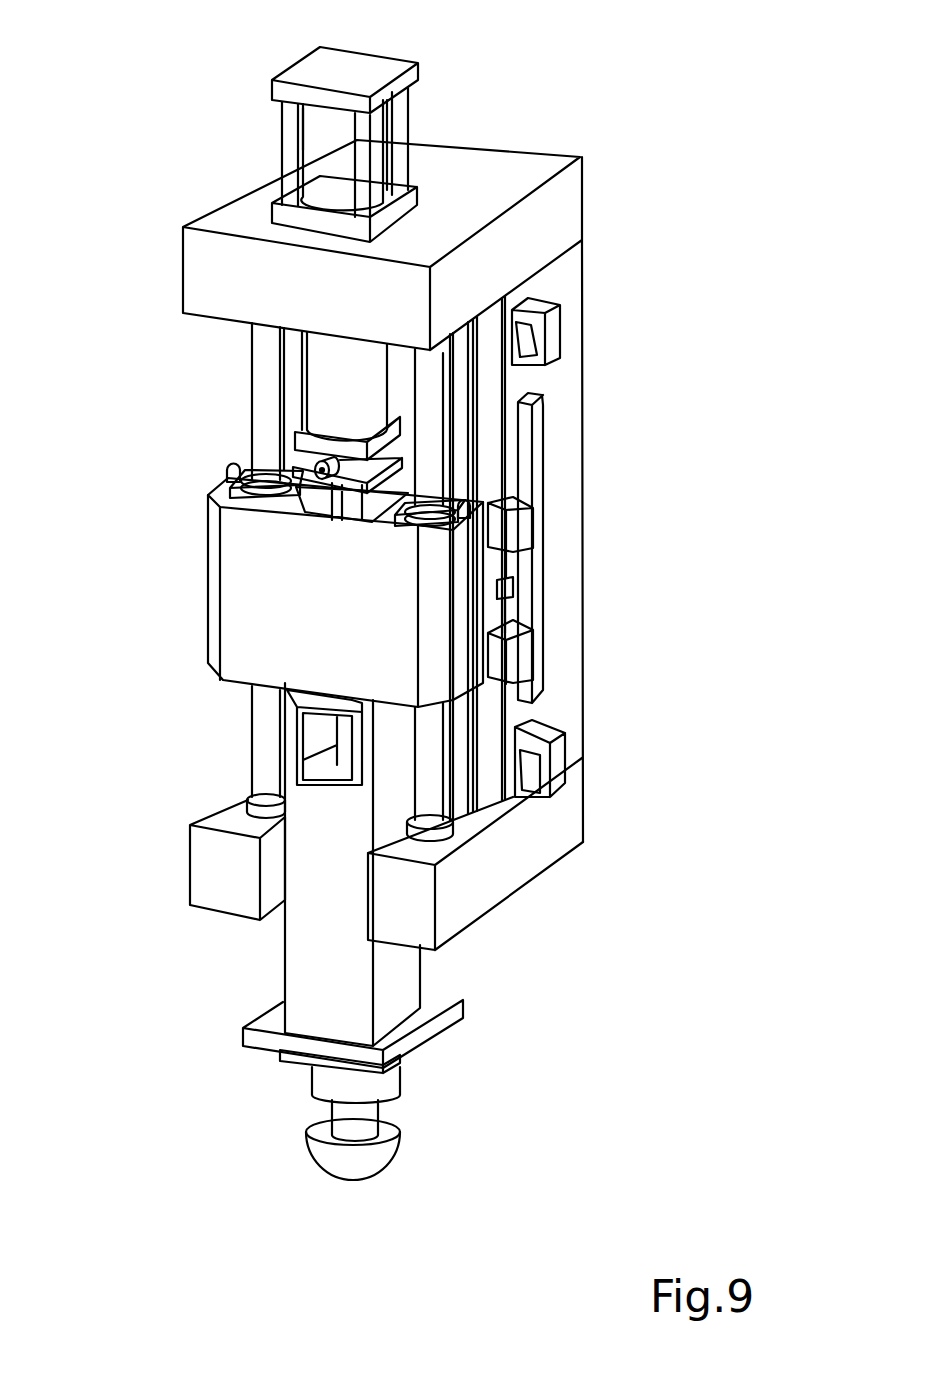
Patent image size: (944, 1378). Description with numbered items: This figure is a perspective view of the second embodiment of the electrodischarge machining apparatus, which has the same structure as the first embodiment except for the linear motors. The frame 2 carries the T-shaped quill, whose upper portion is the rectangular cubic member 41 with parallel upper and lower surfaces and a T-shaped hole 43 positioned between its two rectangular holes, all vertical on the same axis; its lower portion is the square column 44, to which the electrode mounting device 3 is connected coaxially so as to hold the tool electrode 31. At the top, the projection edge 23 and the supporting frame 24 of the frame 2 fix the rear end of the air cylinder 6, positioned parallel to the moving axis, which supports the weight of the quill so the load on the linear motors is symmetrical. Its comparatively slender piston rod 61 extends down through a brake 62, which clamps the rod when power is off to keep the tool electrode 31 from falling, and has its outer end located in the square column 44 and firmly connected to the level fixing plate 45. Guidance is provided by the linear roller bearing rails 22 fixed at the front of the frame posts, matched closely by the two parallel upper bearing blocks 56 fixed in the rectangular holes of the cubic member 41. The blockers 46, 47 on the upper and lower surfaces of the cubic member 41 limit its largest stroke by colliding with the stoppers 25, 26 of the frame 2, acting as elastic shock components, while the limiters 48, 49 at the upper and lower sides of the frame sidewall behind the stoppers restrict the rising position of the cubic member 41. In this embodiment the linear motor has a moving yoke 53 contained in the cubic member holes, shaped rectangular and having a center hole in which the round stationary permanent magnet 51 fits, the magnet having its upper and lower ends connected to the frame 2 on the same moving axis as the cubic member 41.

The frame 2 is at (560, 205).
The electrode mounting device 3 is at (453, 1017).
The air cylinder 6 is at (377, 152).
The linear roller bearing rails 22 is at (457, 398).
The projection edge 23 is at (348, 70).
The supporting frame 24 is at (397, 117).
The stopper 25 is at (537, 517).
The stopper 26 is at (528, 645).
The tool electrode 31 is at (377, 1158).
The rectangular cubic member 41 is at (500, 595).
The T-shaped hole 43 is at (290, 504).
The square column 44 is at (403, 985).
The level fixing plate 45 is at (313, 765).
The blocker 46 is at (492, 493).
The blocker 47 is at (478, 700).
The limiter 48 is at (553, 328).
The limiter 49 is at (557, 763).
The permanent magnet 51 is at (267, 410).
The yoke 53 is at (228, 474).
The upper bearing blocks 56 is at (338, 466).
The piston rod 61 is at (372, 478).
The brake 62 is at (405, 450).